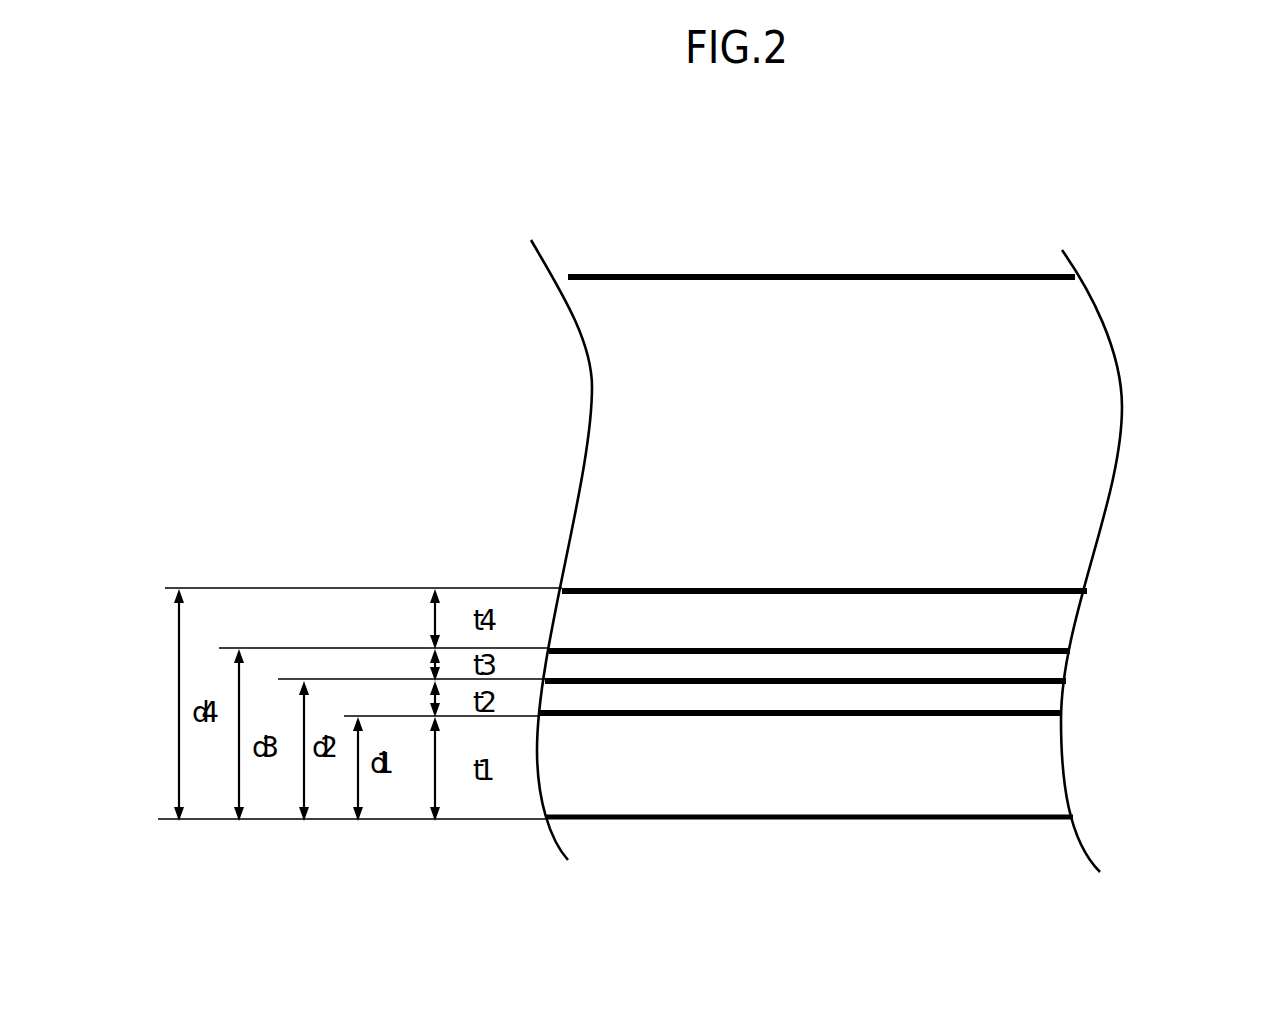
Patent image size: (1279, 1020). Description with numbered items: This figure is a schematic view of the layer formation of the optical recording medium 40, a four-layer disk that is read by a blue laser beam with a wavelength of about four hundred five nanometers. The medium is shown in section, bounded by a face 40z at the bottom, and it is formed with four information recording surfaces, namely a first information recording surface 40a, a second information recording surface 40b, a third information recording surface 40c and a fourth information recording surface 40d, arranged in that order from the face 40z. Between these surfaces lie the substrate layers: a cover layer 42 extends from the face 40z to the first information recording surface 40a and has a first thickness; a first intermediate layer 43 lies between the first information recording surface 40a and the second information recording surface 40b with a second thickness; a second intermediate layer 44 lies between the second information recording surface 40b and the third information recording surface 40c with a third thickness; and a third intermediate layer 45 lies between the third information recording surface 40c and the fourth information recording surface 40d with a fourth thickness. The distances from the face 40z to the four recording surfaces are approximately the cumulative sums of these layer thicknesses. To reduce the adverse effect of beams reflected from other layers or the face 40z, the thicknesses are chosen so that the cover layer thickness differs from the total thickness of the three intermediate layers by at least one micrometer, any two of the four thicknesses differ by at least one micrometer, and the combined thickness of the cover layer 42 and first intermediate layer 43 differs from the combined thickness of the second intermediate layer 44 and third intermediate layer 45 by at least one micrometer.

The optical recording medium 40 is at (979, 240).
The first information recording surface 40a is at (887, 743).
The second information recording surface 40b is at (1067, 677).
The third information recording surface 40c is at (1070, 643).
The fourth information recording surface 40d is at (1062, 582).
The face 40z is at (1070, 817).
The cover layer 42 is at (1040, 777).
The first intermediate layer 43 is at (1042, 698).
The second intermediate layer 44 is at (1048, 659).
The third intermediate layer 45 is at (1065, 607).